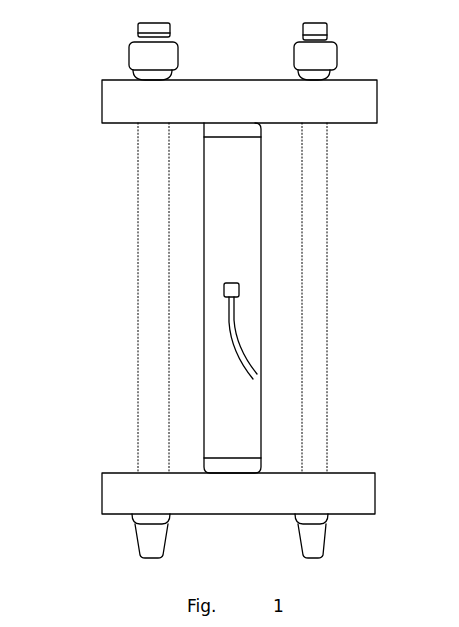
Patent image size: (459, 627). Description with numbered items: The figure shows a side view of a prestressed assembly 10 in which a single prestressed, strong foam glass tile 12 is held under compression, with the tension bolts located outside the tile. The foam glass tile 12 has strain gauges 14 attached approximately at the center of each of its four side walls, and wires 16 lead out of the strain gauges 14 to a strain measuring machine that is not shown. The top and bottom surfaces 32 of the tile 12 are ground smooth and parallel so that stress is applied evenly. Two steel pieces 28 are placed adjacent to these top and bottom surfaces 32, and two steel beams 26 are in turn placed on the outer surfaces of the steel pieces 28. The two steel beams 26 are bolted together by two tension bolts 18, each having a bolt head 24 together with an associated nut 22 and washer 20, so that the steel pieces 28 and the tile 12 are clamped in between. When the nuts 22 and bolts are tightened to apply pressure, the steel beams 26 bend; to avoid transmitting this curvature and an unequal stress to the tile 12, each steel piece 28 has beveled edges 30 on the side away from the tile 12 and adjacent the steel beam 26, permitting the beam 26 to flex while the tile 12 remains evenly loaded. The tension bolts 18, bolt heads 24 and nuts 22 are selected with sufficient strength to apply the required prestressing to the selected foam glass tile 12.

The prestressed assembly 10 is at (378, 171).
The foam glass tile 12 is at (218, 188).
The strain gauges 14 is at (224, 292).
The wires 16 is at (235, 328).
The tension bolts 18 is at (148, 343).
The washers 20 is at (172, 78).
The nuts 22 is at (142, 58).
The bolt heads 24 is at (152, 542).
The steel beams 26 is at (351, 496).
The steel pieces 28 is at (218, 132).
The beveled edges 30 is at (237, 116).
The top and bottom surfaces 32 is at (252, 141).